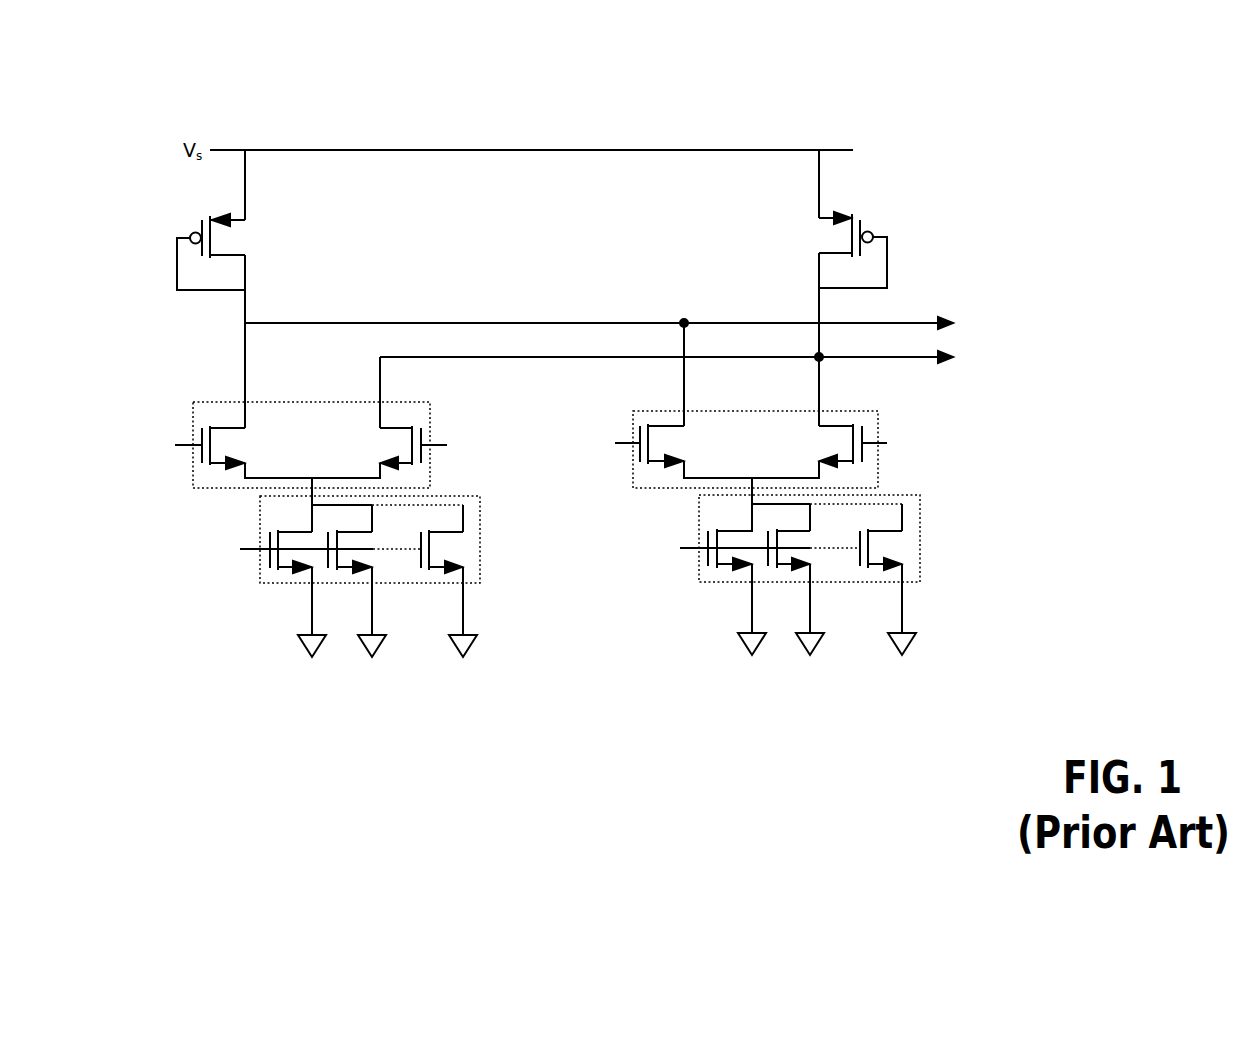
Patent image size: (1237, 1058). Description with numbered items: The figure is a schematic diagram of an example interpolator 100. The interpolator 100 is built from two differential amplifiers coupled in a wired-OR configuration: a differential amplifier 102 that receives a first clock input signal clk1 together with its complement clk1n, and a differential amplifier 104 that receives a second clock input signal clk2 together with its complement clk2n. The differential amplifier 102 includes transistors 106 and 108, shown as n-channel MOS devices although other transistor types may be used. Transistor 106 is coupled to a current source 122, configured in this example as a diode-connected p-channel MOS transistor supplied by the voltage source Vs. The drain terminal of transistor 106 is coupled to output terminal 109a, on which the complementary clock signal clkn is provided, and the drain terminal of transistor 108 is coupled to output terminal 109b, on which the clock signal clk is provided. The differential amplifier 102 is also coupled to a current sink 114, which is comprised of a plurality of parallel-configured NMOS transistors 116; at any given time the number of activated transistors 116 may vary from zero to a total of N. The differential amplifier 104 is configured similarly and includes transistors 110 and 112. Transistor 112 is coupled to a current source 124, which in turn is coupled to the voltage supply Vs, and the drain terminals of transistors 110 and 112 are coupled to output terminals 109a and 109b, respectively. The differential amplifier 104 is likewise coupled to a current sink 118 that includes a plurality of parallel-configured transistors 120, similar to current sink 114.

The interpolator 100 is at (1065, 72).
The differential amplifier 102 is at (312, 422).
The differential amplifier 104 is at (755, 430).
The transistor 106 is at (226, 429).
The transistor 108 is at (395, 429).
The output terminal 109a is at (931, 320).
The output terminal 109b is at (920, 360).
The transistor 110 is at (652, 443).
The transistor 112 is at (851, 443).
The current sink 114 is at (374, 576).
The transistors 116 is at (268, 558).
The current sink 118 is at (762, 575).
The transistors 120 is at (730, 565).
The current source 122 is at (206, 224).
The current source 124 is at (861, 220).